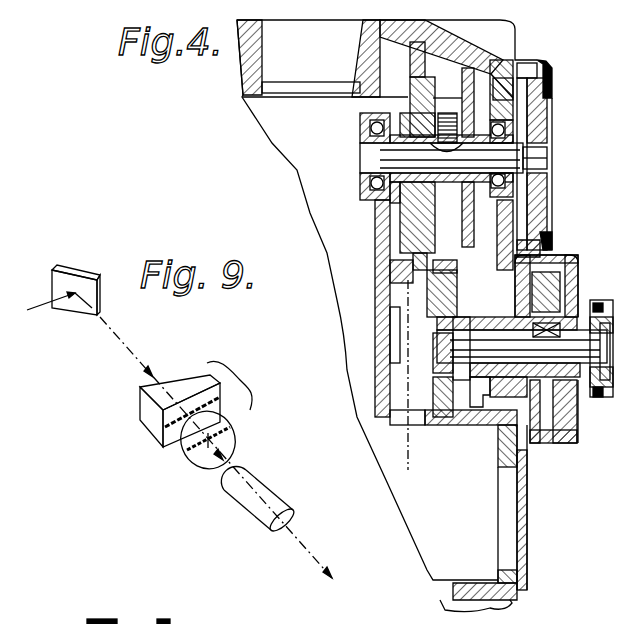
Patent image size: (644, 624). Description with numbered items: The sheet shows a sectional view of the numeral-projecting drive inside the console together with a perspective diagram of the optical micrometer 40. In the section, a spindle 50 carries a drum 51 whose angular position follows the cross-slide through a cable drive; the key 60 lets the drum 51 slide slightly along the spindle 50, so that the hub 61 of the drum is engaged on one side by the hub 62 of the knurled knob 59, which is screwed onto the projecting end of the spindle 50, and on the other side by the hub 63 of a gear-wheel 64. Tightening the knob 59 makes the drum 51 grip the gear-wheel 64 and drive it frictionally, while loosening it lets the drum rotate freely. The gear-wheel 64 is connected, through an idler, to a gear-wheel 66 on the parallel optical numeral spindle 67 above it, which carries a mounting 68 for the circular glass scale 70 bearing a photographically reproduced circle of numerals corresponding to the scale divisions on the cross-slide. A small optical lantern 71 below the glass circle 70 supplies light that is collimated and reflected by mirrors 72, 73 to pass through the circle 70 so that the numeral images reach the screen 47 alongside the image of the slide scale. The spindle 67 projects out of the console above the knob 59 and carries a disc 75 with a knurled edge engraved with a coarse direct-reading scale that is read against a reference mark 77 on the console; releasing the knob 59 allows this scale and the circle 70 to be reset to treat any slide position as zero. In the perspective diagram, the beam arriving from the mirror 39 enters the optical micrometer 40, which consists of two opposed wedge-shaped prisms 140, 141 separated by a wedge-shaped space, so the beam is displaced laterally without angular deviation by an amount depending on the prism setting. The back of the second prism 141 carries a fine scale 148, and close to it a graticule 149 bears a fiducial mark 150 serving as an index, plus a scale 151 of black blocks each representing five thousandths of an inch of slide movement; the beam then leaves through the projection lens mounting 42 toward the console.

In FIG. 4, the screen 47 is at (306, 82).
In FIG. 4, the circular glass scale 70 is at (410, 50).
In FIG. 4, the mounting 68 is at (408, 97).
In FIG. 4, the reference mark 77 is at (497, 62).
In FIG. 4, the optical numeral spindle 67 is at (497, 157).
In FIG. 4, the gear-wheel 66 is at (475, 217).
In FIG. 4, the disc 75 is at (523, 253).
In FIG. 4, the mirror 73 is at (457, 265).
In FIG. 4, the mirror 72 is at (427, 293).
In FIG. 4, the optical lantern 71 is at (395, 312).
In FIG. 4, the drum 51 is at (548, 297).
In FIG. 4, the key 60 is at (548, 330).
In FIG. 4, the knurled knob 59 is at (603, 397).
In FIG. 4, the spindle 50 is at (590, 370).
In FIG. 4, the gear-wheel 64 is at (505, 375).
In FIG. 4, the hub of gear-wheel 63 is at (517, 385).
In FIG. 4, the hub of drum 61 is at (543, 443).
In FIG. 4, the hub of screwed knob 62 is at (567, 443).
In FIG. 9, the mirror 39 is at (98, 297).
In FIG. 9, the wedge-shaped prism 140 is at (177, 380).
In FIG. 9, the wedge-shaped prism 141 is at (160, 438).
In FIG. 9, the fine scale 148 is at (180, 435).
In FIG. 9, the optical micrometer 40 is at (237, 377).
In FIG. 9, the graticule 149 is at (196, 462).
In FIG. 9, the fiducial mark 150 is at (233, 440).
In FIG. 9, the scale 151 is at (208, 448).
In FIG. 9, the projection lens mounting 42 is at (272, 497).